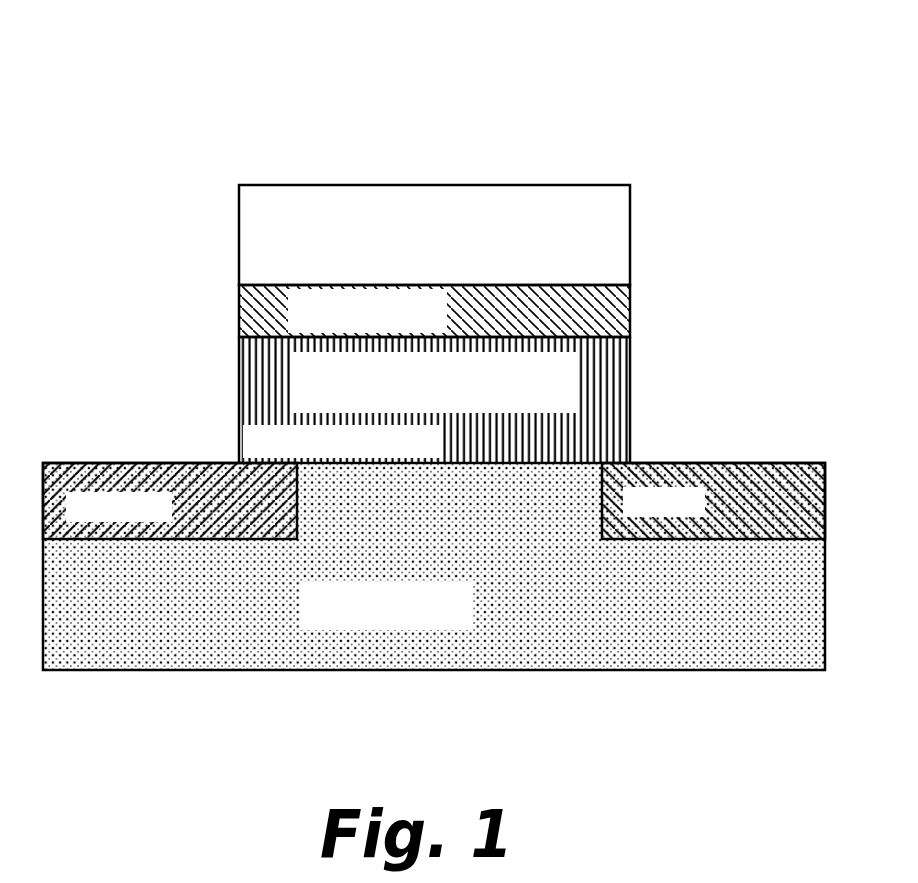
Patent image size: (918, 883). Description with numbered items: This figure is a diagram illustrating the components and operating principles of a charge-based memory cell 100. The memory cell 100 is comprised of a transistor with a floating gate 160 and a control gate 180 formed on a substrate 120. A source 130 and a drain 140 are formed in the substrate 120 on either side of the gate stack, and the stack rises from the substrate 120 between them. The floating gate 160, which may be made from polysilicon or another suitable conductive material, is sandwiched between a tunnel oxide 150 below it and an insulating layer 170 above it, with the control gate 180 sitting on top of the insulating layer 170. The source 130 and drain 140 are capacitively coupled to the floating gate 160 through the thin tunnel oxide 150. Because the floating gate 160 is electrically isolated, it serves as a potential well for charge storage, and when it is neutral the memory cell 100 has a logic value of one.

The memory cell 100 is at (120, 68).
The substrate 120 is at (562, 618).
The source 130 is at (272, 519).
The drain 140 is at (803, 512).
The tunnel oxide 150 is at (608, 453).
The floating gate 160 is at (558, 400).
The insulating layer 170 is at (608, 322).
The control gate 180 is at (608, 247).